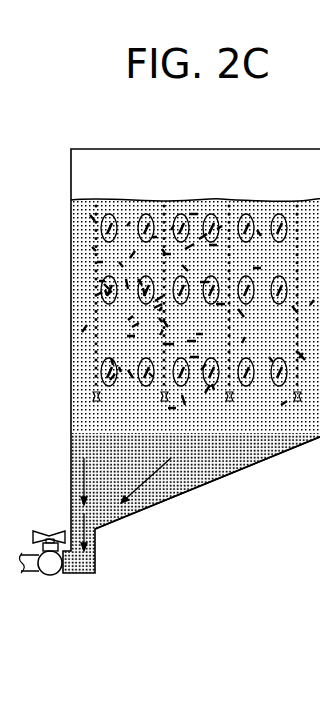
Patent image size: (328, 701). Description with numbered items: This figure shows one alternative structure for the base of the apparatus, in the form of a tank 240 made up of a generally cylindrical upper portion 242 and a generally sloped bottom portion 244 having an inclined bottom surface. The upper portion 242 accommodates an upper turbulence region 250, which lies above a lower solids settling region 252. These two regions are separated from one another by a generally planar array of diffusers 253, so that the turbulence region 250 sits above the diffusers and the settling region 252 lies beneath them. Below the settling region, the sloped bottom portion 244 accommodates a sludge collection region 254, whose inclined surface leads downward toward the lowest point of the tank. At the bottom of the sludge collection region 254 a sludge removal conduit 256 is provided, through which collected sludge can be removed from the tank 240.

The tank 240 is at (108, 141).
The upper portion 242 is at (63, 218).
The sloped bottom portion 244 is at (238, 460).
The upper turbulence region 250 is at (103, 307).
The lower solids settling region 252 is at (187, 421).
The array of diffusers 253 is at (156, 392).
The sludge collection region 254 is at (143, 482).
The sludge removal conduit 256 is at (75, 560).